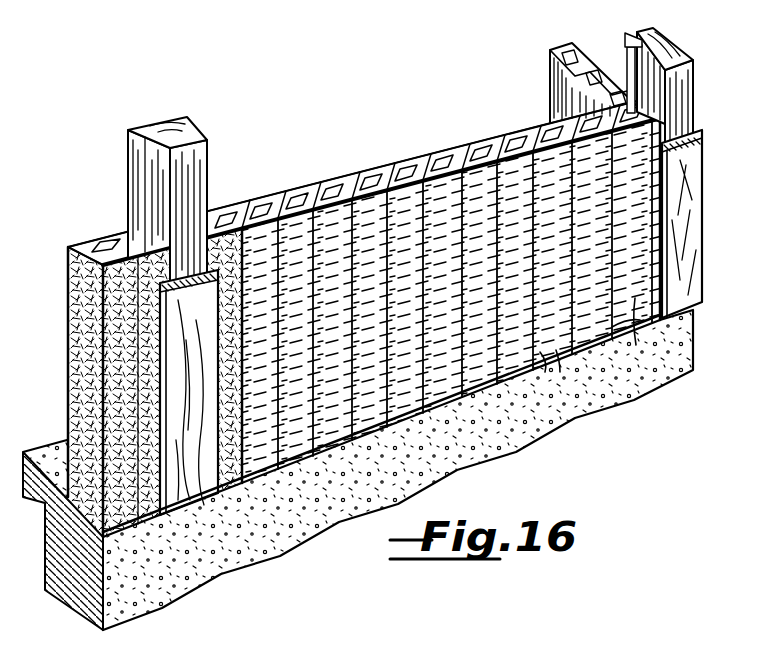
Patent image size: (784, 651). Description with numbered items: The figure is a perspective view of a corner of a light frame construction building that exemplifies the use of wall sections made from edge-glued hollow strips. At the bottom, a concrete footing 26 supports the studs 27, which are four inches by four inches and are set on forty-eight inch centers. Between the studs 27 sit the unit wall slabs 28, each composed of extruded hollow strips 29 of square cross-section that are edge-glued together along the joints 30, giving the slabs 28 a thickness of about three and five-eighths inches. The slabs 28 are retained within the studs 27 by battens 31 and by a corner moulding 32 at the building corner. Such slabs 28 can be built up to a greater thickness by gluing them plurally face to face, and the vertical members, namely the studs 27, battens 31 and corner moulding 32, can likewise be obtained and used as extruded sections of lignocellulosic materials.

The concrete footing 26 is at (45, 453).
The studs 27 is at (193, 175).
The unit wall slabs 28 is at (107, 312).
The extruded hollow strips 29 is at (504, 148).
The joints 30 is at (635, 313).
The battens 31 is at (143, 128).
The corner moulding 32 is at (629, 42).